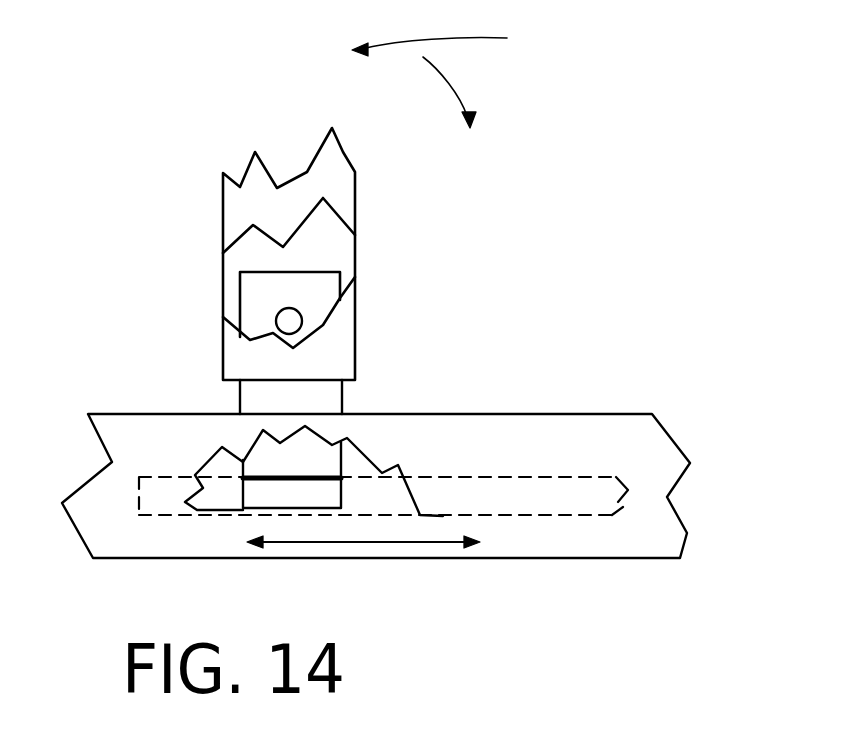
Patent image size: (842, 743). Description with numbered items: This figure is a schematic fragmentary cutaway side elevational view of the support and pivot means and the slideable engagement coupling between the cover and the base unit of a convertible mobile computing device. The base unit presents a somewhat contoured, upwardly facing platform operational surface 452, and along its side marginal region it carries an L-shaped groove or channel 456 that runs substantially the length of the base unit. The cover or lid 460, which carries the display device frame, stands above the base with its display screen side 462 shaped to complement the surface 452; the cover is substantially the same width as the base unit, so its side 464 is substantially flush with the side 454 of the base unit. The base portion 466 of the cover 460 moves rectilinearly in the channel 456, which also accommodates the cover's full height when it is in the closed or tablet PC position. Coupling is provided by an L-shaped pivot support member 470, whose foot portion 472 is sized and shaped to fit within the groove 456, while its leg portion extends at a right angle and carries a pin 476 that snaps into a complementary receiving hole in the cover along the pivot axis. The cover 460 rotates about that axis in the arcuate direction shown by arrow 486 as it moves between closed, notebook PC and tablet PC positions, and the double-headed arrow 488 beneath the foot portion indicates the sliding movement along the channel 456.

The platform operational surface 452 is at (588, 400).
The side of the base unit 454 is at (614, 551).
The L-shaped groove or channel 456 is at (518, 493).
The cover or lid 460 is at (190, 218).
The display screen side 462 is at (376, 208).
The side of the cover 464 is at (297, 223).
The base portion of the cover 466 is at (410, 333).
The L-shaped pivot support member 470 is at (318, 277).
The foot portion 472 is at (257, 495).
The pin 476 is at (282, 312).
The arrow 486 is at (453, 82).
The sliding direction arrow 488 is at (360, 542).